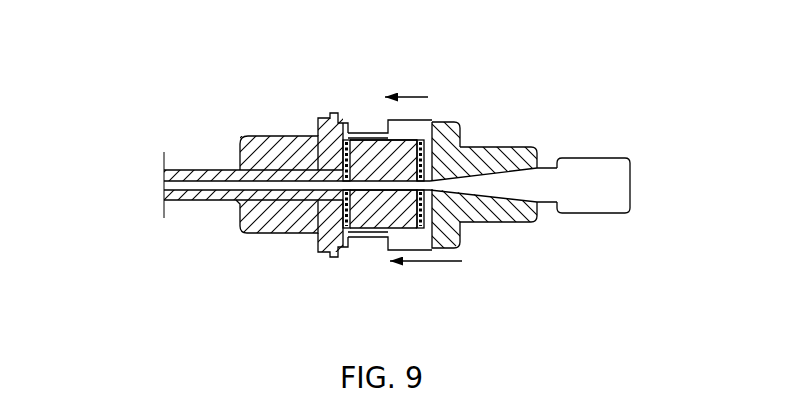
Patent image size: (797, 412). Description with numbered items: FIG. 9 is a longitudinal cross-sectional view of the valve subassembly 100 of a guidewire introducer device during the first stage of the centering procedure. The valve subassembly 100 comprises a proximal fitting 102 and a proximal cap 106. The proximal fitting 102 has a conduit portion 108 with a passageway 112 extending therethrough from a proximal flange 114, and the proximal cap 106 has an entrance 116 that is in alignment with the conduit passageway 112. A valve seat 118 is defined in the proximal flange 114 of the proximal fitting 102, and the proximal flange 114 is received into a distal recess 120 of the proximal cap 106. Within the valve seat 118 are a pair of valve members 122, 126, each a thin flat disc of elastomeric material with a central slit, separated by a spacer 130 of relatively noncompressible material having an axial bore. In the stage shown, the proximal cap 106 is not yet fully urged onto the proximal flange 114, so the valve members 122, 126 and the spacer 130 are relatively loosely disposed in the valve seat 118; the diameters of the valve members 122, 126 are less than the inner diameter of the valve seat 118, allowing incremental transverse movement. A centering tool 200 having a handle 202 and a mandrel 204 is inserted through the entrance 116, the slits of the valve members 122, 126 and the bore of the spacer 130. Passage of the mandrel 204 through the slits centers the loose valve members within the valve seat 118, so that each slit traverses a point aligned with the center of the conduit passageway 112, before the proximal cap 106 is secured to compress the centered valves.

The valve subassembly 100 is at (263, 124).
The proximal fitting 102 is at (229, 128).
The proximal cap 106 is at (505, 146).
The conduit portion 108 is at (185, 163).
The passageway 112 is at (192, 189).
The proximal flange 114 is at (355, 118).
The entrance 116 is at (508, 182).
The valve seat 118 is at (337, 137).
The distal recess 120 is at (443, 116).
The valve member 122 is at (337, 211).
The valve member 126 is at (413, 243).
The spacer 130 is at (360, 237).
The centering tool 200 is at (599, 156).
The handle 202 is at (598, 215).
The mandrel 204 is at (455, 208).